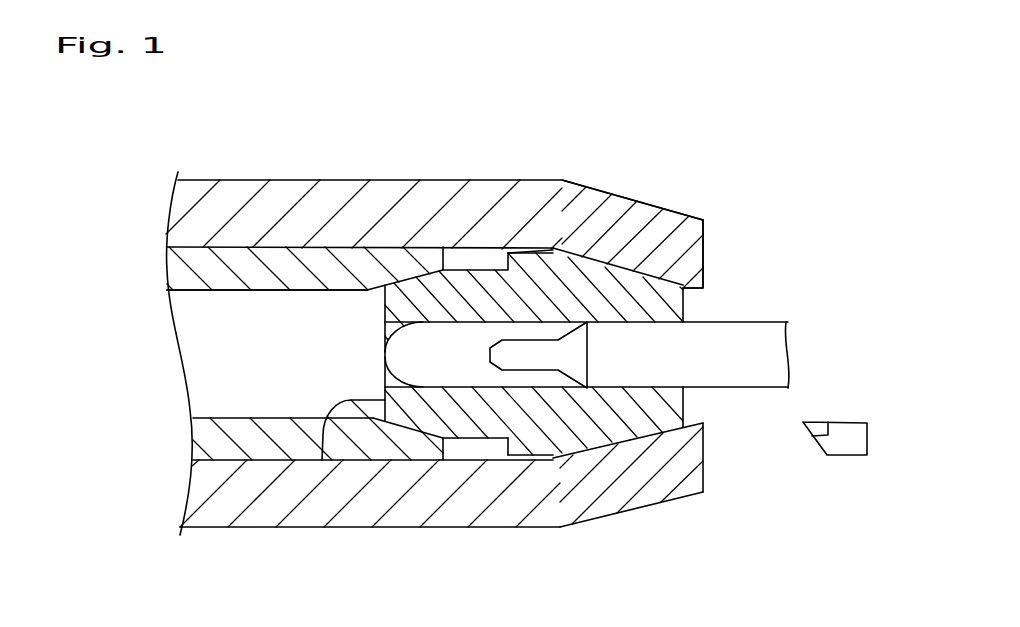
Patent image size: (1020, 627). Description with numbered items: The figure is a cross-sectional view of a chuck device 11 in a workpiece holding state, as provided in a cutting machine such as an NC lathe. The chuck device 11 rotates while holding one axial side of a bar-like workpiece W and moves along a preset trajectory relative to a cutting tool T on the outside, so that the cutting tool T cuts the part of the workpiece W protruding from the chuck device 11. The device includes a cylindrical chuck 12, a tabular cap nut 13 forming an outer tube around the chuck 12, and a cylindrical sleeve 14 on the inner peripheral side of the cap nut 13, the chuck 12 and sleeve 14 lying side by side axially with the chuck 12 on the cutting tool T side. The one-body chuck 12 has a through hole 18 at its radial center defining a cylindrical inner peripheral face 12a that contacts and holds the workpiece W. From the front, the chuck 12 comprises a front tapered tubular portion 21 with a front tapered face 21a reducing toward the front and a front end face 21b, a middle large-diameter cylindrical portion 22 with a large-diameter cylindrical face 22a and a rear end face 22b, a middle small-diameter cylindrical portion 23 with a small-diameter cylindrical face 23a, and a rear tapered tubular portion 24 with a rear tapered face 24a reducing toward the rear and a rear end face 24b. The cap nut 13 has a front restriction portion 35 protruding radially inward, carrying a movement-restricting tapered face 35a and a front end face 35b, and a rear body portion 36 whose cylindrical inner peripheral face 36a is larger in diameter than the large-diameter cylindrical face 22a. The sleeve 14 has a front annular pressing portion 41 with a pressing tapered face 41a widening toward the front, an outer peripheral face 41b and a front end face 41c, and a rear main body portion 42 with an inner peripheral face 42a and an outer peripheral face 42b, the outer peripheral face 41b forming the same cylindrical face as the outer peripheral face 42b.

The chuck device 11 is at (720, 172).
The chuck 12 is at (595, 250).
The inner peripheral face 12a is at (384, 348).
The cap nut 13 is at (645, 195).
The sleeve 14 is at (291, 238).
The through hole 18 is at (466, 346).
The front tapered tubular portion 21 is at (648, 300).
The front tapered face 21a is at (610, 448).
The front end face 21b is at (684, 402).
The middle large-diameter cylindrical portion 22 is at (534, 258).
The large-diameter cylindrical face 22a is at (563, 460).
The end face 22b is at (502, 450).
The middle small-diameter cylindrical portion 23 is at (468, 278).
The small-diameter cylindrical face 23a is at (494, 440).
The rear tapered tubular portion 24 is at (413, 272).
The rear tapered face 24a is at (405, 427).
The rear end face 24b is at (323, 440).
The restriction portion 35 is at (693, 244).
The movement-restricting tapered face 35a is at (642, 433).
The front end face 35b is at (704, 468).
The body portion 36 is at (322, 216).
The inner peripheral face 36a is at (263, 461).
The pressing portion 41 is at (433, 262).
The pressing tapered face 41a is at (383, 378).
The outer peripheral face 41b is at (443, 452).
The front end face 41c is at (455, 462).
The main body portion 42 is at (237, 268).
The inner peripheral face 42a is at (217, 417).
The outer peripheral face 42b is at (273, 465).
The workpiece W is at (739, 338).
The cutting tool T is at (843, 442).